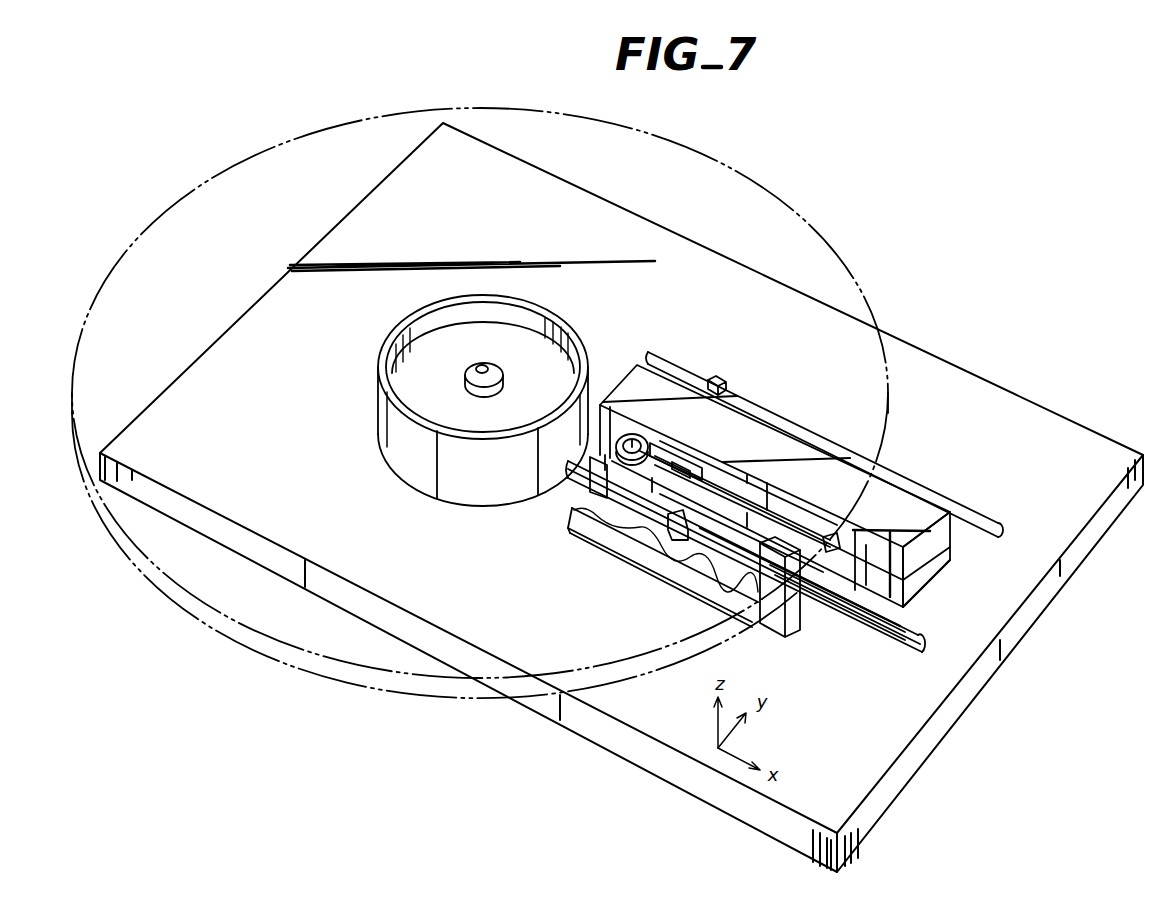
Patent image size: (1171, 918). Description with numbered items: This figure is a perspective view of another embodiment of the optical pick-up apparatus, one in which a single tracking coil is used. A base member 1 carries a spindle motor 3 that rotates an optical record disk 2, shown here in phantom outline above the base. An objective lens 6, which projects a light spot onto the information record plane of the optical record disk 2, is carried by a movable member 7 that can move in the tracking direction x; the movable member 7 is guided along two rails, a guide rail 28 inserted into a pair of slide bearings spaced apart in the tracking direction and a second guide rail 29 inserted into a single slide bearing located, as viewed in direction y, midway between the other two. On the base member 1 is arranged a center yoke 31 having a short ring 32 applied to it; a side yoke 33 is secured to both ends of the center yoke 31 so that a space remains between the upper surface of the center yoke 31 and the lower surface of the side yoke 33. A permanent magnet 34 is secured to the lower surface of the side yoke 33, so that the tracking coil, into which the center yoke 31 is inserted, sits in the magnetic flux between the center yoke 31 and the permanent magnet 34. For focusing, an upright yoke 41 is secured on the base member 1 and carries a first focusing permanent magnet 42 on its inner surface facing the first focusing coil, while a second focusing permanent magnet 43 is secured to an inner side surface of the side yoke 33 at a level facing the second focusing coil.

The base member 1 is at (980, 397).
The optical record disk 2 is at (812, 224).
The spindle motor 3 is at (383, 438).
The objective lens 6 is at (633, 434).
The movable member 7 is at (563, 507).
The guide rail 28 is at (897, 647).
The guide rail 29 is at (990, 520).
The center yoke 31 is at (937, 573).
The short ring 32 is at (860, 598).
The side yoke 33 is at (903, 503).
The permanent magnet 34 is at (832, 605).
The upright yoke 41 is at (790, 633).
The first focusing permanent magnet 42 is at (655, 497).
The second focusing permanent magnet 43 is at (767, 502).